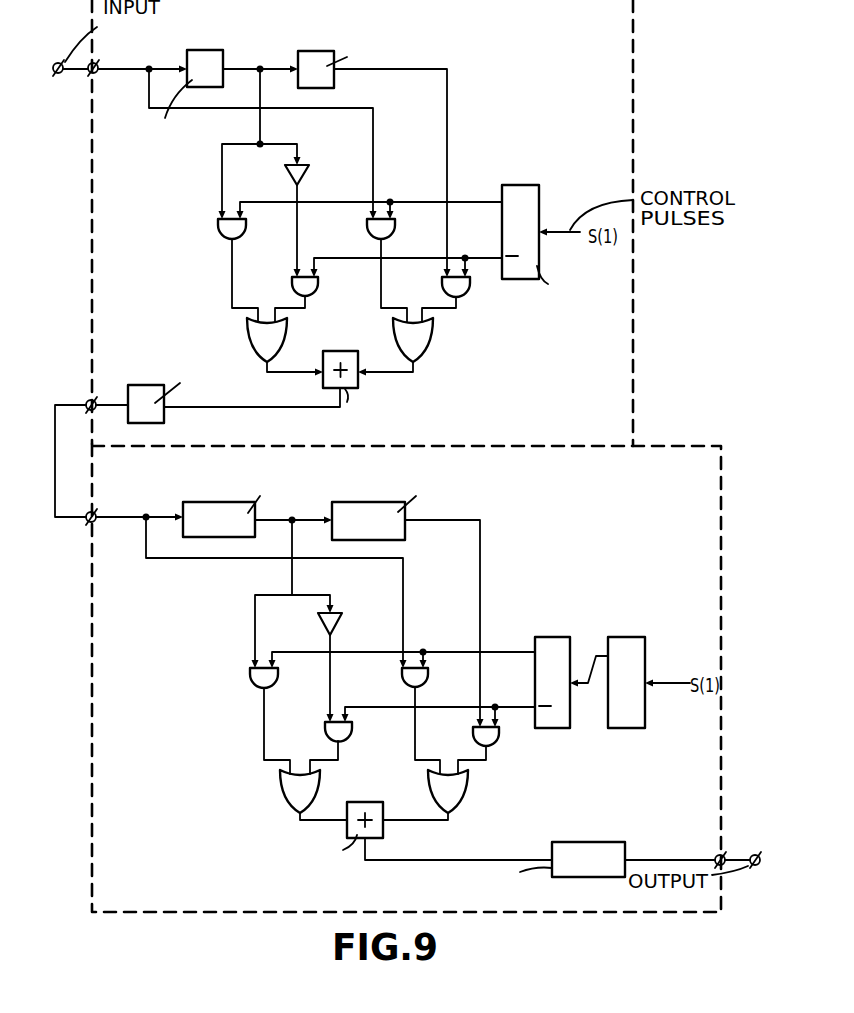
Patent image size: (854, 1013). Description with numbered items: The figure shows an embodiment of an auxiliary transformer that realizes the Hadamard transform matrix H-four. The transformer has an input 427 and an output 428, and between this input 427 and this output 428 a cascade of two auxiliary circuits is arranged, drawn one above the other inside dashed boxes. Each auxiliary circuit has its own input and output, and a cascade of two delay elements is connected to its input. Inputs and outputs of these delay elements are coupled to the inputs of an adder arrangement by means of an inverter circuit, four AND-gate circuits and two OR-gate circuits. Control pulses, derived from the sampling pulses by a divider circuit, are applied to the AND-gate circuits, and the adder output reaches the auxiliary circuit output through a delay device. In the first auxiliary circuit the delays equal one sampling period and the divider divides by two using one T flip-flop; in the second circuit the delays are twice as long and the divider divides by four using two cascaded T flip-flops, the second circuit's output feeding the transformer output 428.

The input 427 is at (57, 62).
The output 428 is at (755, 868).